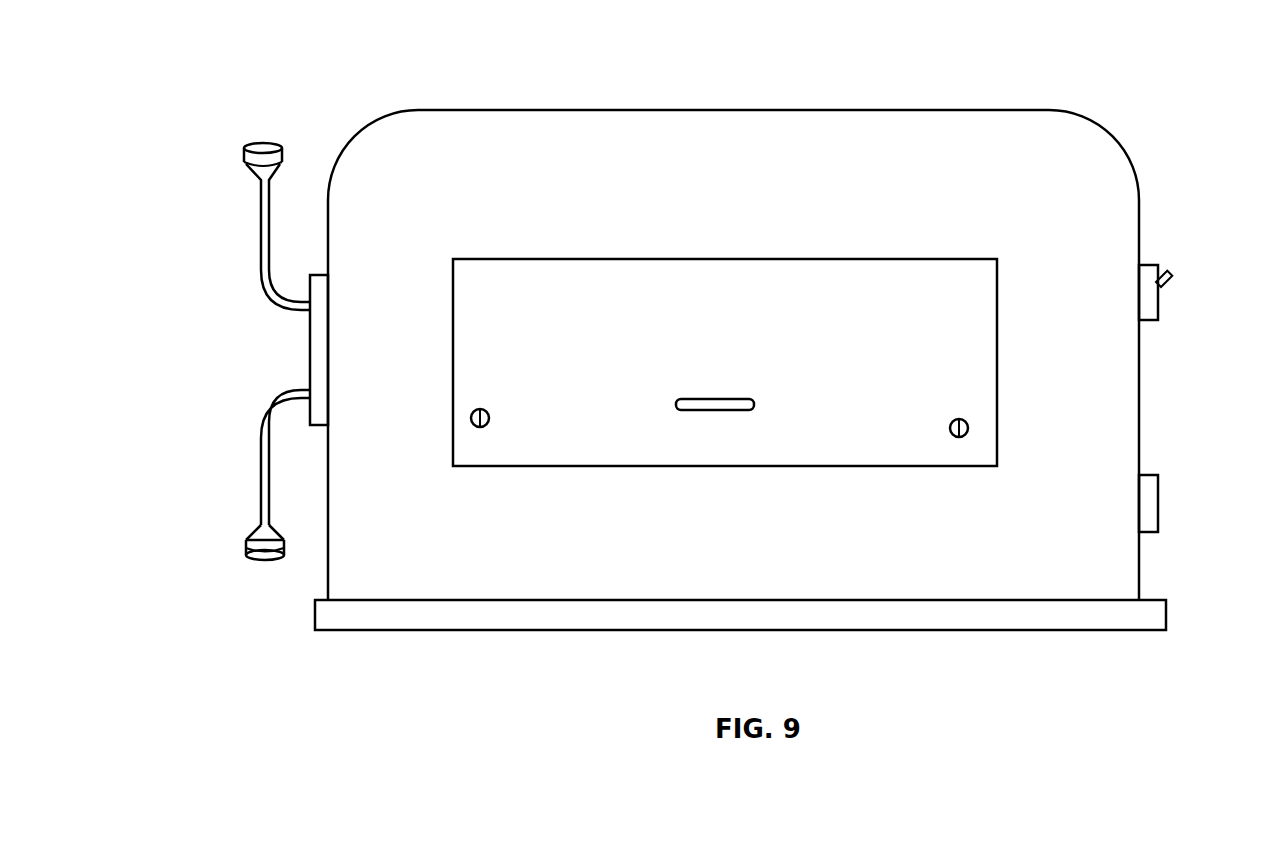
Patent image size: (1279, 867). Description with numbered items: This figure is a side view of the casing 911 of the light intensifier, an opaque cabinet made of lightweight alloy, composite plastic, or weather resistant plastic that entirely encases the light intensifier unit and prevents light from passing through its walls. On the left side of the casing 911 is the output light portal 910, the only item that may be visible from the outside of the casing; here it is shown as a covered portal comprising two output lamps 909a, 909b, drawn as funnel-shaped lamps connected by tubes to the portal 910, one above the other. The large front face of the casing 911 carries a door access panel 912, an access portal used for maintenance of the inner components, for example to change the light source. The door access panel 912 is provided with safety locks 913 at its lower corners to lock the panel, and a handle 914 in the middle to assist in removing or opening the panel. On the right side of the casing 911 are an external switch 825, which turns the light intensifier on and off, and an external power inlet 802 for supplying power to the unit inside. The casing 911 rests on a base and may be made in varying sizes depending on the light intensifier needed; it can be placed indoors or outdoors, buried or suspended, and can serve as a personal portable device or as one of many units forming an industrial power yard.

The casing 911 is at (437, 110).
The door access panel 912 is at (704, 258).
The safety locks 913 is at (482, 408).
The handle 914 is at (716, 398).
The external switch 825 is at (1158, 287).
The external power inlet 802 is at (1158, 522).
The output light portal 910 is at (310, 360).
The output lamp 909a is at (260, 200).
The output lamp 909b is at (260, 416).